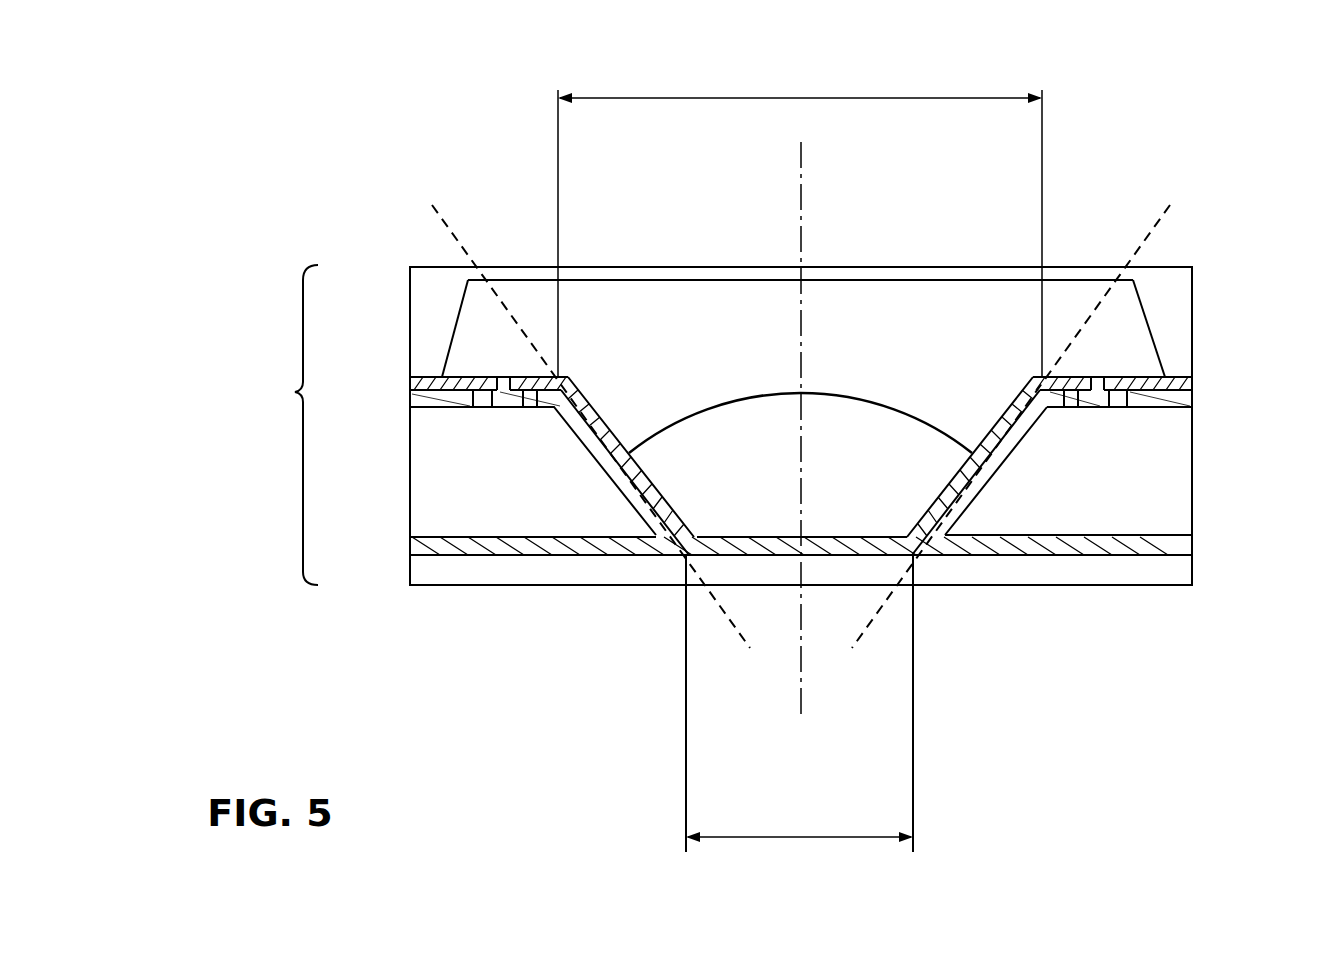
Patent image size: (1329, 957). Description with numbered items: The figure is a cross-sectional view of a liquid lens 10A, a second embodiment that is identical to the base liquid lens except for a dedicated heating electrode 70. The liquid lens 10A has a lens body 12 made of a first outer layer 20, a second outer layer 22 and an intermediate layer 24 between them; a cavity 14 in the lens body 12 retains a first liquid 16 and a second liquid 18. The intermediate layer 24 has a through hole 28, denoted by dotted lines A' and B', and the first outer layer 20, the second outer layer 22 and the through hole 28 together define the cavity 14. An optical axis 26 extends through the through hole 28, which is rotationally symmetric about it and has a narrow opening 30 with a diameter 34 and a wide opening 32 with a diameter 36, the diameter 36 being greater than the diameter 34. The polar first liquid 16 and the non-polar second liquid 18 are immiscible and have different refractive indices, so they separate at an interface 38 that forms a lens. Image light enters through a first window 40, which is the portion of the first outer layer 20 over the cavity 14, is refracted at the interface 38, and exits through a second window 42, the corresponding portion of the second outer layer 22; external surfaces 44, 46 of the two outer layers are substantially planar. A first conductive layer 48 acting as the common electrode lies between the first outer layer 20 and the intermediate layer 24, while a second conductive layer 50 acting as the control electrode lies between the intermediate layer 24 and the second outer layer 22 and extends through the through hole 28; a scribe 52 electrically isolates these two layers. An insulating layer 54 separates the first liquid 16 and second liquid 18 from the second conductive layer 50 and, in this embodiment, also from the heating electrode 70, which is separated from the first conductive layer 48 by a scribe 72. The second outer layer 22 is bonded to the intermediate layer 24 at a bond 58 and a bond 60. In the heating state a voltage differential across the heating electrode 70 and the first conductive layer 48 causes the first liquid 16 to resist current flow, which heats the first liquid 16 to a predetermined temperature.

The liquid lens 10A is at (346, 208).
The lens body 12 is at (286, 425).
The cavity 14 is at (621, 320).
The first liquid 16 is at (688, 330).
The second liquid 18 is at (880, 463).
The first outer layer 20 is at (440, 315).
The second outer layer 22 is at (457, 563).
The intermediate layer 24 is at (465, 467).
The optical axis 26 is at (802, 162).
The through hole 28 is at (745, 637).
The narrow opening 30 is at (915, 558).
The wide opening 32 is at (1030, 377).
The diameter 34 is at (787, 838).
The diameter 36 is at (696, 96).
The interface 38 is at (780, 392).
The first window 40 is at (838, 275).
The second window 42 is at (770, 565).
The external surface 44 is at (440, 266).
The external surface 46 is at (483, 587).
The first conductive layer 48 is at (1095, 396).
The second conductive layer 50 is at (1068, 547).
The scribe 52 is at (1072, 408).
The insulating layer 54 is at (640, 475).
The bond 58 is at (966, 540).
The bond 60 is at (1130, 562).
The heating electrode 70 is at (1180, 397).
The scribe 72 is at (1122, 406).
The dotted line A' is at (591, 454).
The dotted line B' is at (1011, 453).